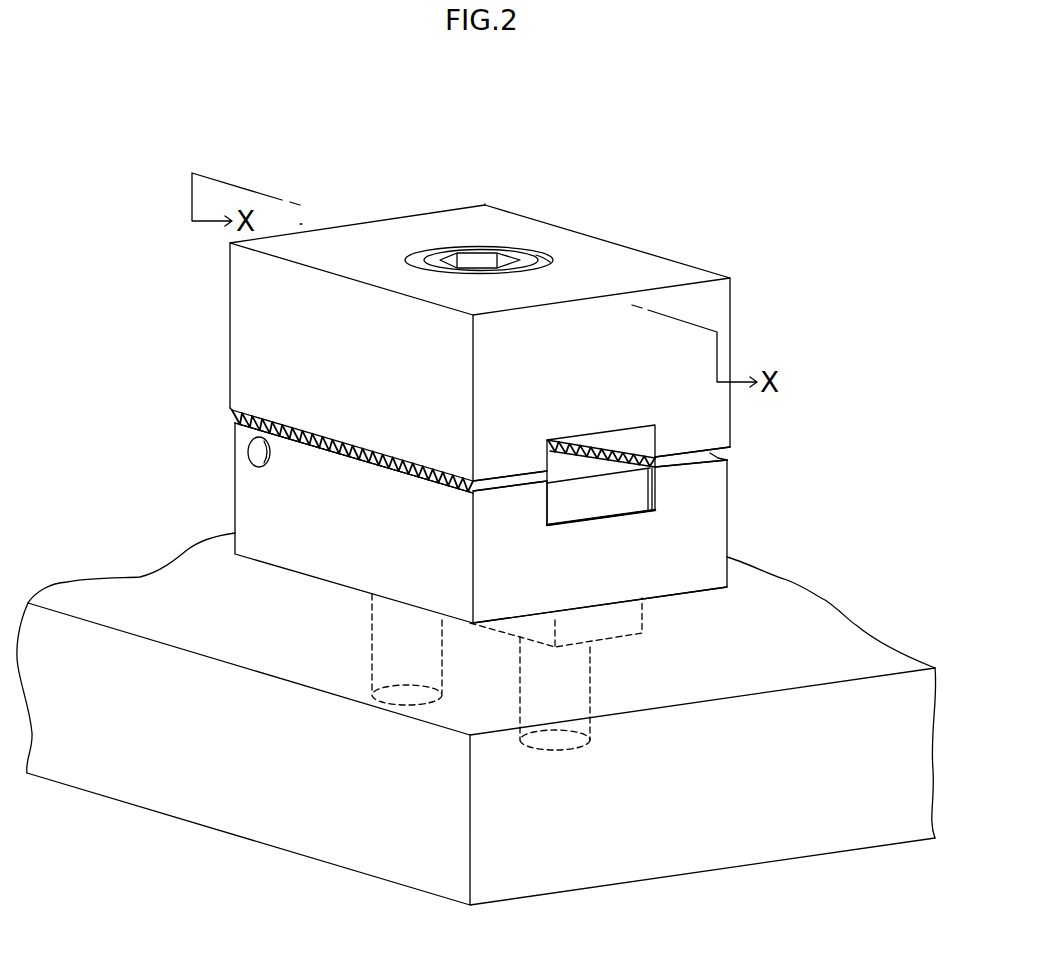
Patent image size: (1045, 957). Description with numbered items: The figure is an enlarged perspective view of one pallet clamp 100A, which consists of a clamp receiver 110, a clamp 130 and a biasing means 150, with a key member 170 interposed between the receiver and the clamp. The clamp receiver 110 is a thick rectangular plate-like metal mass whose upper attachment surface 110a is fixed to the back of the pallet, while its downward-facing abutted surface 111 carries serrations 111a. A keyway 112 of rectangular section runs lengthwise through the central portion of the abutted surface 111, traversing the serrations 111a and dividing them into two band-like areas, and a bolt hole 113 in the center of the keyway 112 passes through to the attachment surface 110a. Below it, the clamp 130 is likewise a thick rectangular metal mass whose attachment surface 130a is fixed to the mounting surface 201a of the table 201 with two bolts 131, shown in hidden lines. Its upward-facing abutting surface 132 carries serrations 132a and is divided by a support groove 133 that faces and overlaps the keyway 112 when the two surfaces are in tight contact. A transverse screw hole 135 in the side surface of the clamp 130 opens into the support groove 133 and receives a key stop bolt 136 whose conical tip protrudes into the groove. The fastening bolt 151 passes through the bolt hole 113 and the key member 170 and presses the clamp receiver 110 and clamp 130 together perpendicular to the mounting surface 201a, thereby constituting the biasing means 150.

The pallet clamp 100A is at (418, 137).
The clamp receiver 110 is at (658, 252).
The attachment surface 110a is at (370, 240).
The abutted surface 111 is at (500, 487).
The serrations 111a is at (310, 432).
The keyway 112 is at (566, 436).
The bolt hole 113 is at (545, 258).
The clamp 130 is at (730, 518).
The attachment surface 130a is at (672, 598).
The bolts 131 is at (428, 648).
The abutting surface 132 is at (523, 494).
The serrations 132a is at (361, 476).
The support groove 133 is at (578, 526).
The transverse screw hole 135 is at (255, 464).
The key stop bolt 136 is at (250, 450).
The biasing means 150 is at (479, 260).
The fastening bolt 151 is at (479, 258).
The key member 170 is at (621, 498).
The table 201 is at (178, 778).
The mounting surface 201a is at (97, 588).